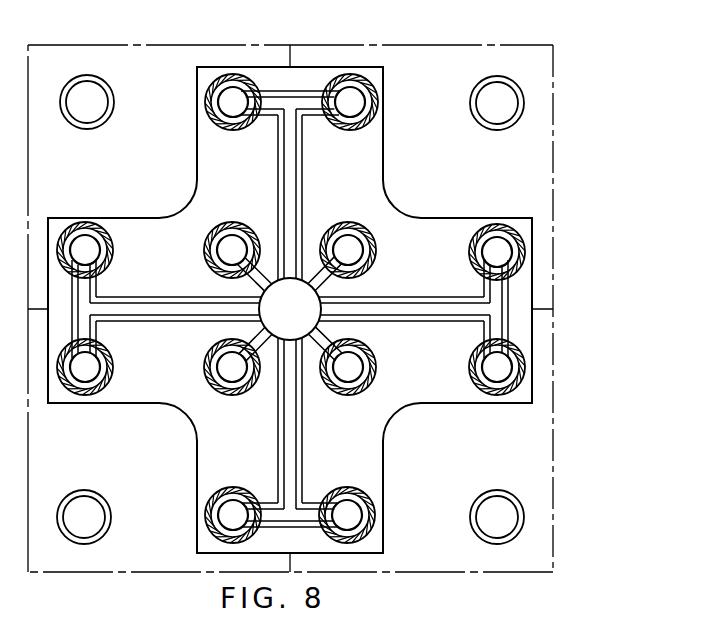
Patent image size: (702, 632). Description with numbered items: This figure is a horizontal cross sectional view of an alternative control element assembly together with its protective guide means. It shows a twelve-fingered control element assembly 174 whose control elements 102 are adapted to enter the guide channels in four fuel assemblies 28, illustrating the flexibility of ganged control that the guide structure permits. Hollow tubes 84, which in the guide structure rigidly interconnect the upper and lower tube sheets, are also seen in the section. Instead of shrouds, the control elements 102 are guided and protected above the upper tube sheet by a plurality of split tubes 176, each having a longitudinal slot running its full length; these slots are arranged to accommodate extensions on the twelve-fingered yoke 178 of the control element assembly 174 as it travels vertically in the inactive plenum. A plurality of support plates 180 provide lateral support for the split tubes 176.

The fuel assemblies 28 is at (553, 180).
The hollow tubes 84 is at (93, 75).
The control elements 102 is at (358, 108).
The 12-fingered control element assembly 174 is at (290, 310).
The split tubes 176 is at (207, 100).
The 12-fingered yoke 178 is at (288, 180).
The support plates 180 is at (370, 438).